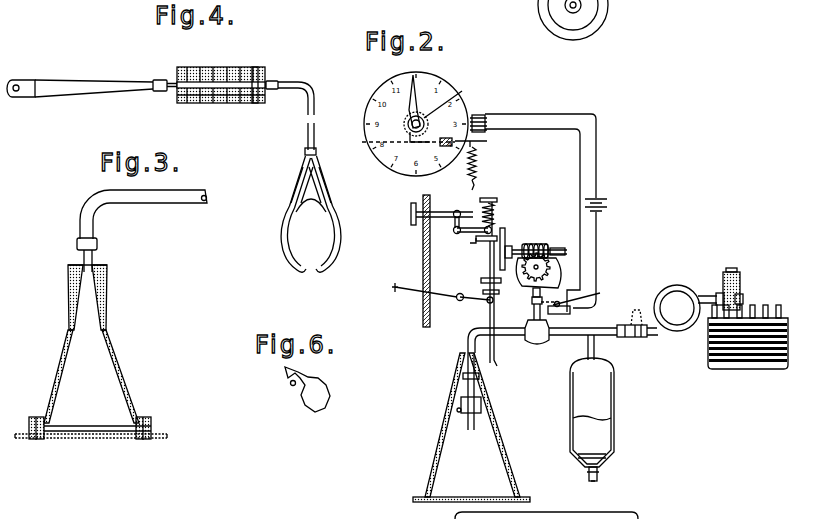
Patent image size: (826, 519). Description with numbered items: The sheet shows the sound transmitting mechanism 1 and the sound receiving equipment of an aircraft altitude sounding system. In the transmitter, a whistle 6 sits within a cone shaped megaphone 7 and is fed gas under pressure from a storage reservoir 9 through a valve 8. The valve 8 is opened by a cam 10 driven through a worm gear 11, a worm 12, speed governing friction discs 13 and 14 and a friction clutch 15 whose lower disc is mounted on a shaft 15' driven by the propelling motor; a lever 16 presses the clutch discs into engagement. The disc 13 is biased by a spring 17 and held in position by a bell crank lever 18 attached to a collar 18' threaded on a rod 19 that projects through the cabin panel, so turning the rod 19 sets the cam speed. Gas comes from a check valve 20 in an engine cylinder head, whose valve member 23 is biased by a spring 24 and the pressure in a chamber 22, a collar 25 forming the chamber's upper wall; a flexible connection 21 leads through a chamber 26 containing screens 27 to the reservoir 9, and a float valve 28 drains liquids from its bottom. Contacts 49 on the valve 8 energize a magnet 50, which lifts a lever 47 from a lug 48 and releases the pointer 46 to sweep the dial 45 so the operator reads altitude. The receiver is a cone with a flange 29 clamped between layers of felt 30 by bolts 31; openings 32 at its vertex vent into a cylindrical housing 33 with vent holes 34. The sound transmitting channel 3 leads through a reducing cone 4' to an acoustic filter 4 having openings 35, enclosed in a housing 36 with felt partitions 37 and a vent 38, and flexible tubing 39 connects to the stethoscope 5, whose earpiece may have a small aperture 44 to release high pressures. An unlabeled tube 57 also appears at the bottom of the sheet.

In FIG. 2, the sound transmitting mechanism 1 is at (540, 418).
In FIG. 4, the sound transmitting channel 3 is at (16, 80).
In FIG. 3, the sound transmitting channel 3 is at (177, 192).
In FIG. 4, the acoustic filter 4 is at (290, 83).
In FIG. 4, the reducing cone 4' is at (106, 76).
In FIG. 4, the stethoscope 5 is at (330, 232).
In FIG. 2, the whistle 6 is at (460, 389).
In FIG. 3, the megaphone 7 is at (104, 351).
In FIG. 2, the megaphone 7 is at (440, 436).
In FIG. 2, the valve 8 is at (543, 328).
In FIG. 2, the storage reservoir 9 is at (602, 389).
In FIG. 2, the cam 10 is at (551, 276).
In FIG. 2, the worm gear 11 is at (533, 273).
In FIG. 2, the worm 12 is at (537, 246).
In FIG. 2, the speed governing friction disc 13 is at (477, 241).
In FIG. 2, the speed governing friction disc 14 is at (490, 259).
In FIG. 2, the friction clutch 15 is at (473, 287).
In FIG. 2, the shaft 15' is at (505, 348).
In FIG. 2, the lever 16 is at (397, 285).
In FIG. 2, the spring 17 is at (497, 209).
In FIG. 2, the bell crank lever 18 is at (461, 225).
In FIG. 2, the collar 18' is at (459, 200).
In FIG. 2, the rod 19 is at (431, 212).
In FIG. 2, the check valve 20 is at (740, 280).
In FIG. 2, the flexible connection 21 is at (677, 289).
In FIG. 2, the chamber 22 is at (743, 296).
In FIG. 2, the valve member 23 is at (745, 307).
In FIG. 2, the spring 24 is at (731, 269).
In FIG. 2, the collar 25 is at (722, 296).
In FIG. 2, the chamber 26 is at (632, 337).
In FIG. 2, the screens 27 is at (639, 313).
In FIG. 2, the float valve 28 is at (598, 455).
In FIG. 3, the flange 29 is at (153, 428).
In FIG. 3, the layers of felt 30 is at (152, 420).
In FIG. 3, the bolts 31 is at (36, 417).
In FIG. 3, the openings 32 is at (88, 273).
In FIG. 3, the cylindrical housing 33 is at (105, 279).
In FIG. 3, the vent holes 34 is at (70, 313).
In FIG. 4, the openings 35 is at (235, 72).
In FIG. 4, the housing 36 is at (190, 70).
In FIG. 4, the felt partitions 37 is at (206, 103).
In FIG. 4, the vent 38 is at (255, 67).
In FIG. 4, the flexible tubing 39 is at (315, 100).
In FIG. 6, the aperture 44 is at (293, 385).
In FIG. 2, the dial 45 is at (430, 83).
In FIG. 2, the pointer 46 is at (451, 96).
In FIG. 2, the lever 47 is at (437, 141).
In FIG. 2, the lug 48 is at (365, 142).
In FIG. 2, the contacts 49 is at (589, 300).
In FIG. 2, the magnet 50 is at (487, 125).
In FIG. 2, the tube 57 is at (559, 515).